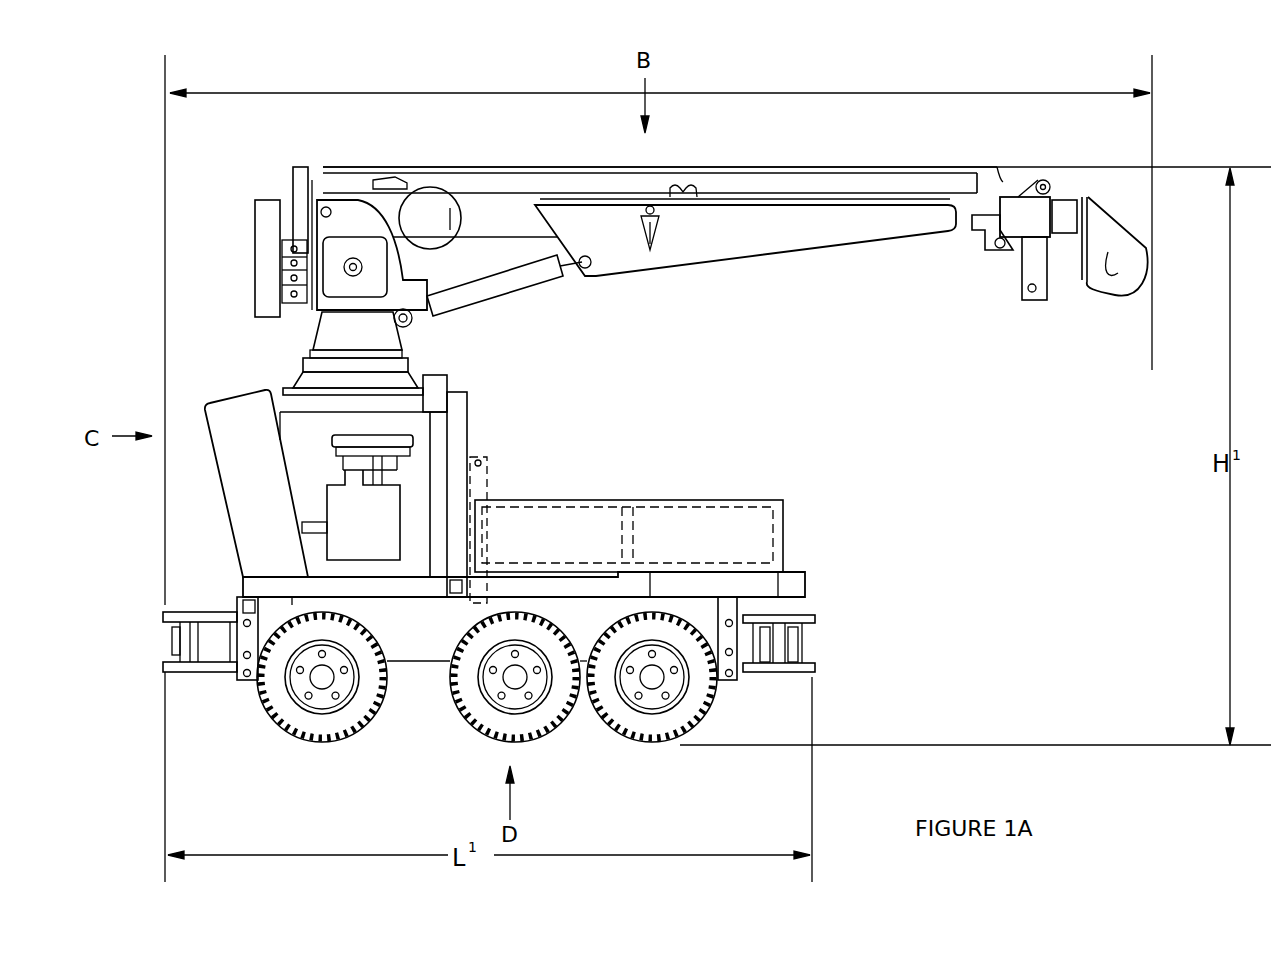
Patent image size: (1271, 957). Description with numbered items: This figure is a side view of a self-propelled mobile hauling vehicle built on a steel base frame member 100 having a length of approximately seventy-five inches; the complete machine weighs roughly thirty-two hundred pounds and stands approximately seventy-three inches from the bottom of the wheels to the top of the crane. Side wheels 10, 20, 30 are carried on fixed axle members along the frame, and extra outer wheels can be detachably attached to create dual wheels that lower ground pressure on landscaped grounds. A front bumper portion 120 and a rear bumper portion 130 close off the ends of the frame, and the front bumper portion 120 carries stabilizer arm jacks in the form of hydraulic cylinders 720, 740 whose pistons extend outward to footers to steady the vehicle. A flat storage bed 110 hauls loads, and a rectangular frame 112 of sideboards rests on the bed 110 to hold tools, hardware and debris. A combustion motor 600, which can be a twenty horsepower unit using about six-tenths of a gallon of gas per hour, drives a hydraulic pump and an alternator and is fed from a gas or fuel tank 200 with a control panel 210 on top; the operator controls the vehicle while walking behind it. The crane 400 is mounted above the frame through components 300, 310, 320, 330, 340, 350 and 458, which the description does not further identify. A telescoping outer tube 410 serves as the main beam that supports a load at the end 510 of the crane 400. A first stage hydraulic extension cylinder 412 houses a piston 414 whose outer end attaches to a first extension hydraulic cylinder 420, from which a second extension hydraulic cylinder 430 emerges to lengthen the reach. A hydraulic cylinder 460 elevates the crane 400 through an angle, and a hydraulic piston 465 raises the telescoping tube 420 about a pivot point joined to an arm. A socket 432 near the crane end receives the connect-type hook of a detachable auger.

The side wheel 10 is at (328, 718).
The side wheel 20 is at (494, 722).
The side wheel 30 is at (668, 720).
The steel base frame member 100 is at (293, 590).
The flat bed portion 110 is at (703, 565).
The rectangular type frame 112 is at (573, 530).
The front bumper portion 120 is at (727, 682).
The rear bumper portion 130 is at (250, 682).
The fuel tank 200 is at (255, 522).
The control panel 210 is at (228, 398).
The crane housing 300 is at (347, 210).
The pedestal 310 is at (340, 336).
The turntable 320 is at (447, 375).
The base plate 330 is at (310, 383).
The mounting block 340 is at (436, 402).
The support post 350 is at (455, 440).
The crane 400 is at (750, 298).
The telescoping outer tube 410 is at (492, 226).
The first stage hydraulic extension cylinder 412 is at (735, 186).
The piston 414 is at (1005, 185).
The first extension hydraulic cylinder 420 is at (970, 233).
The second extension hydraulic cylinder 430 is at (1074, 215).
The socket 432 is at (1032, 286).
The cylinder pivot 458 is at (410, 323).
The hydraulic cylinder 460 is at (458, 298).
The hydraulic piston 465 is at (582, 270).
The crane end 510 is at (1118, 274).
The combustion motor 600 is at (410, 523).
The stabilizer arm jack hydraulic cylinder 720 is at (768, 638).
The stabilizer arm jack hydraulic cylinder 740 is at (791, 638).